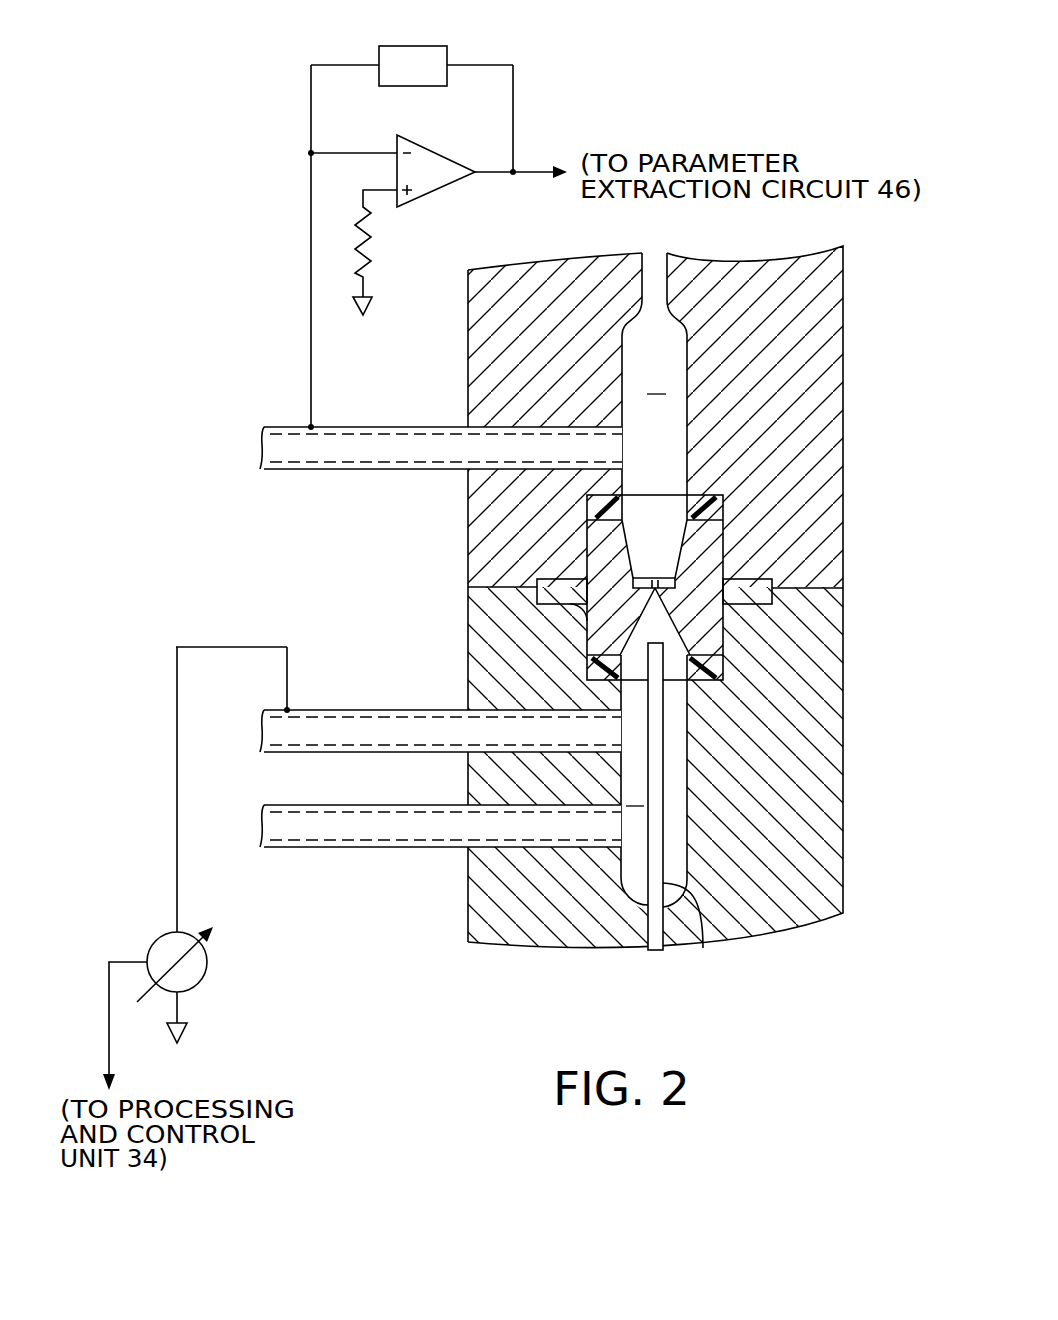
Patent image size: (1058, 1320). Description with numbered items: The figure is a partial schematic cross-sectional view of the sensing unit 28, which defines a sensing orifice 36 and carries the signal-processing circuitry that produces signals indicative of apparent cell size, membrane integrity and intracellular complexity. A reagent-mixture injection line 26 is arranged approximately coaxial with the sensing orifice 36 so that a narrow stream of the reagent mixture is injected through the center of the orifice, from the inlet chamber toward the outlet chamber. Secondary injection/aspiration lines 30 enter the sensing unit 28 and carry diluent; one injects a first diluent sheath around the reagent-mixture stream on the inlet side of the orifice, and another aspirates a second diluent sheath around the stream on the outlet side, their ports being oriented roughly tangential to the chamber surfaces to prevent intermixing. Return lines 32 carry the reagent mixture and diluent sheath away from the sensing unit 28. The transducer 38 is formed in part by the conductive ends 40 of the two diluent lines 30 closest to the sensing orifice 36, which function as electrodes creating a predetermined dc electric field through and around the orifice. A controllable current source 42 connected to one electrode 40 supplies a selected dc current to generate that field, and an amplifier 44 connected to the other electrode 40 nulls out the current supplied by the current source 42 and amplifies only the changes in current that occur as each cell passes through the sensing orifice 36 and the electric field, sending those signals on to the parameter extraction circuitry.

The reagent-mixture injection line 26 is at (703, 948).
The sensing unit 28 is at (868, 318).
The secondary injection/aspiration lines 30 is at (262, 440).
The return lines 32 is at (660, 262).
The sensing orifice 36 is at (660, 578).
The transducer 38 is at (246, 303).
The conductive ends 40 is at (433, 427).
The controllable current source 42 is at (208, 972).
The amplifier 44 is at (476, 52).